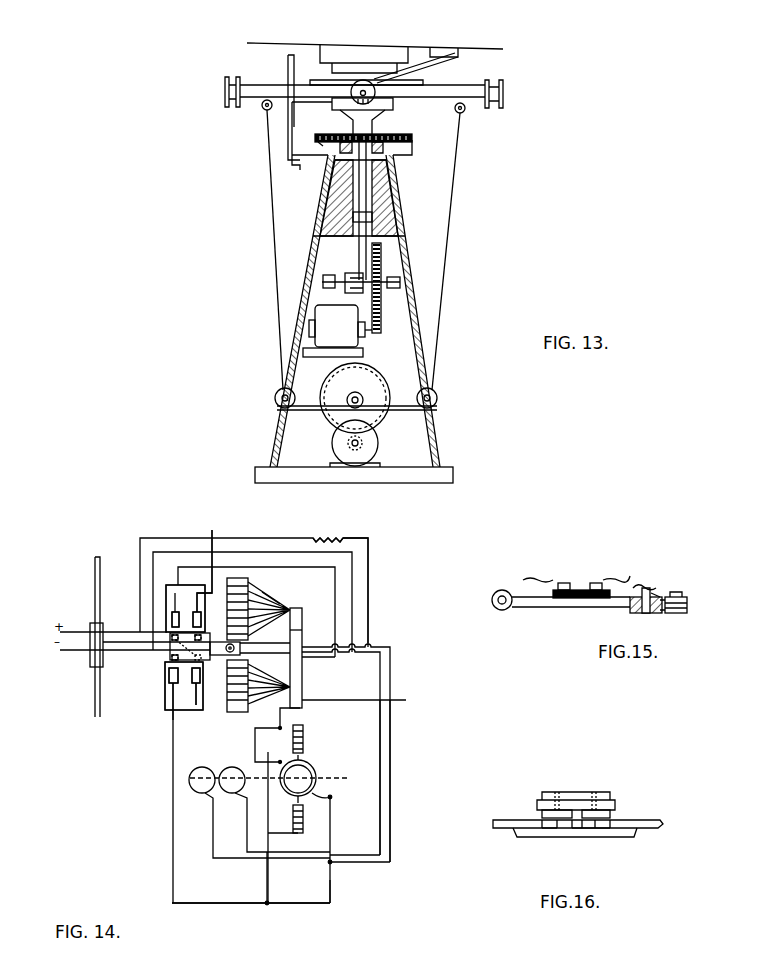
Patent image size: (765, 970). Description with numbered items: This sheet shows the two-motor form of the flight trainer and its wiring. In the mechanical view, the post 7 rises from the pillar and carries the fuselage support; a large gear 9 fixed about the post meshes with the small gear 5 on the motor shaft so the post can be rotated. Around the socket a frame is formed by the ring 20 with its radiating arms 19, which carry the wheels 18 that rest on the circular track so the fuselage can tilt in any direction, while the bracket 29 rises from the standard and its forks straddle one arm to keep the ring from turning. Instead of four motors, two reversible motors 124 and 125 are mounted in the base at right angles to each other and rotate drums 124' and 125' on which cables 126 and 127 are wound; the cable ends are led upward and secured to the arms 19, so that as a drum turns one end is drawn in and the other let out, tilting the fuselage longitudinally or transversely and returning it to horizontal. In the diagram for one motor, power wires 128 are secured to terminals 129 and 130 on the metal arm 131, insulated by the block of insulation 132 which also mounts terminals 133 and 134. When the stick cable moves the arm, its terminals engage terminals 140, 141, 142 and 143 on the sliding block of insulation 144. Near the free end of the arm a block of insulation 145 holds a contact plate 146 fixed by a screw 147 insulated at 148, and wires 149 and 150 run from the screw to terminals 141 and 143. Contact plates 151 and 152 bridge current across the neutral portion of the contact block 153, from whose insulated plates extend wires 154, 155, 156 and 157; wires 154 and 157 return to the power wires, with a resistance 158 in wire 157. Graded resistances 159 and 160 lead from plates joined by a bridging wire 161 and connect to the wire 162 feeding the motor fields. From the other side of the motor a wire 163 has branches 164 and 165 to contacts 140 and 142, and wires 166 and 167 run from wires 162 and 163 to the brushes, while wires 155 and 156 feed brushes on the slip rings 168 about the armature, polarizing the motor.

In FIG. 13, the gear 5 is at (410, 134).
In FIG. 13, the post 7 is at (374, 128).
In FIG. 13, the large gear 9 is at (322, 143).
In FIG. 13, the wheels 18 is at (352, 92).
In FIG. 13, the arms 19 is at (452, 86).
In FIG. 13, the ring 20 is at (325, 101).
In FIG. 13, the bracket 29 is at (288, 143).
In FIG. 13, the motor 124 is at (392, 460).
In FIG. 14, the motor 124 is at (314, 778).
In FIG. 13, the drum 124' is at (402, 398).
In FIG. 13, the motor 125 is at (296, 331).
In FIG. 13, the drum 125' is at (310, 268).
In FIG. 13, the cable 126 is at (452, 255).
In FIG. 13, the cable 127 is at (362, 244).
In FIG. 14, the power wires 128 is at (74, 648).
In FIG. 14, the terminal 129 is at (178, 640).
In FIG. 14, the terminal 130 is at (180, 657).
In FIG. 14, the metal arm 131 is at (132, 657).
In FIG. 15, the metal arm 131 is at (550, 607).
In FIG. 14, the block of insulation 132 is at (196, 645).
In FIG. 15, the block of insulation 132 is at (583, 590).
In FIG. 14, the terminal 133 is at (172, 684).
In FIG. 15, the terminal 133 is at (565, 583).
In FIG. 14, the terminal 134 is at (196, 684).
In FIG. 15, the terminal 134 is at (598, 583).
In FIG. 14, the terminal 140 is at (172, 618).
In FIG. 14, the terminal 141 is at (192, 618).
In FIG. 14, the terminal 142 is at (173, 690).
In FIG. 14, the terminal 143 is at (196, 692).
In FIG. 14, the sliding block of insulation 144 is at (166, 625).
In FIG. 15, the block of insulation 145 is at (632, 606).
In FIG. 15, the contact plate 146 is at (652, 613).
In FIG. 14, the screw 147 is at (214, 658).
In FIG. 15, the screw 147 is at (655, 595).
In FIG. 15, the insulation 148 is at (637, 597).
In FIG. 14, the wire 149 is at (213, 530).
In FIG. 14, the wire 150 is at (210, 706).
In FIG. 14, the contact plate 151 is at (283, 673).
In FIG. 15, the contact plate 151 is at (680, 613).
In FIG. 16, the contact plate 151 is at (543, 811).
In FIG. 14, the contact plate 152 is at (302, 628).
In FIG. 16, the contact plate 152 is at (612, 812).
In FIG. 14, the contact block 153 is at (240, 578).
In FIG. 14, the wire 154 is at (380, 712).
In FIG. 14, the wire 155 is at (350, 657).
In FIG. 16, the wire 155 is at (565, 838).
In FIG. 14, the wire 156 is at (392, 652).
In FIG. 16, the wire 156 is at (603, 838).
In FIG. 14, the wire 157 is at (368, 552).
In FIG. 16, the wire 157 is at (545, 838).
In FIG. 14, the resistance 158 is at (338, 540).
In FIG. 14, the graded resistance 159 is at (240, 708).
In FIG. 14, the graded resistance 160 is at (282, 590).
In FIG. 14, the bridging wire 161 is at (303, 634).
In FIG. 14, the wire 162 is at (368, 702).
In FIG. 14, the wire 163 is at (268, 882).
In FIG. 14, the branch wire 164 is at (235, 903).
In FIG. 14, the branch wire 165 is at (330, 900).
In FIG. 14, the wire 166 is at (255, 748).
In FIG. 14, the wire 167 is at (330, 797).
In FIG. 14, the slip rings 168 is at (203, 796).